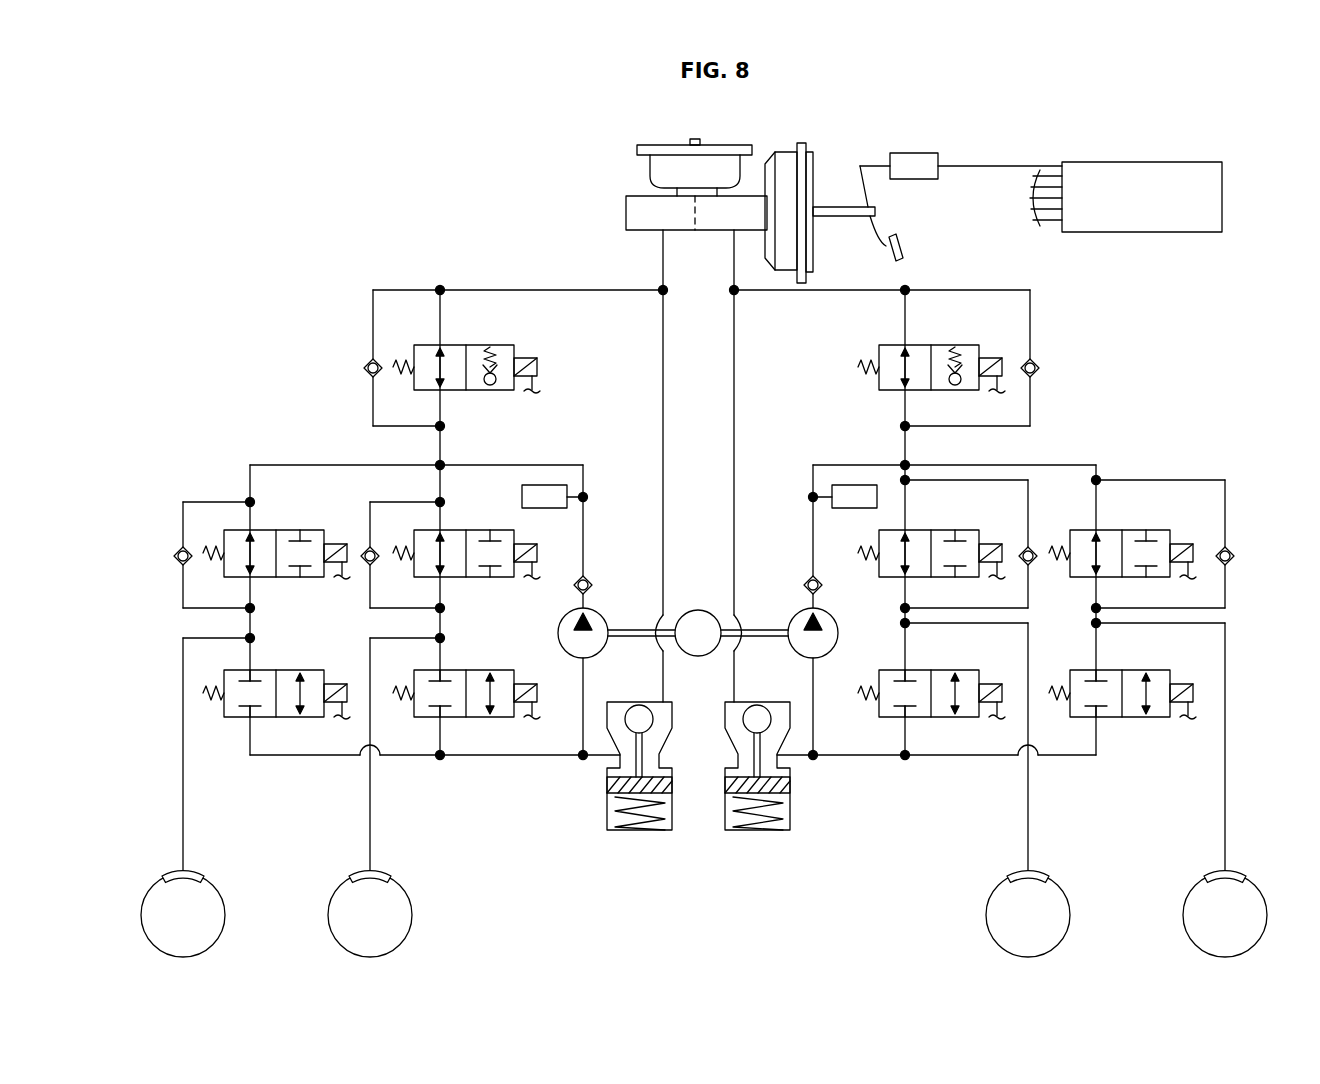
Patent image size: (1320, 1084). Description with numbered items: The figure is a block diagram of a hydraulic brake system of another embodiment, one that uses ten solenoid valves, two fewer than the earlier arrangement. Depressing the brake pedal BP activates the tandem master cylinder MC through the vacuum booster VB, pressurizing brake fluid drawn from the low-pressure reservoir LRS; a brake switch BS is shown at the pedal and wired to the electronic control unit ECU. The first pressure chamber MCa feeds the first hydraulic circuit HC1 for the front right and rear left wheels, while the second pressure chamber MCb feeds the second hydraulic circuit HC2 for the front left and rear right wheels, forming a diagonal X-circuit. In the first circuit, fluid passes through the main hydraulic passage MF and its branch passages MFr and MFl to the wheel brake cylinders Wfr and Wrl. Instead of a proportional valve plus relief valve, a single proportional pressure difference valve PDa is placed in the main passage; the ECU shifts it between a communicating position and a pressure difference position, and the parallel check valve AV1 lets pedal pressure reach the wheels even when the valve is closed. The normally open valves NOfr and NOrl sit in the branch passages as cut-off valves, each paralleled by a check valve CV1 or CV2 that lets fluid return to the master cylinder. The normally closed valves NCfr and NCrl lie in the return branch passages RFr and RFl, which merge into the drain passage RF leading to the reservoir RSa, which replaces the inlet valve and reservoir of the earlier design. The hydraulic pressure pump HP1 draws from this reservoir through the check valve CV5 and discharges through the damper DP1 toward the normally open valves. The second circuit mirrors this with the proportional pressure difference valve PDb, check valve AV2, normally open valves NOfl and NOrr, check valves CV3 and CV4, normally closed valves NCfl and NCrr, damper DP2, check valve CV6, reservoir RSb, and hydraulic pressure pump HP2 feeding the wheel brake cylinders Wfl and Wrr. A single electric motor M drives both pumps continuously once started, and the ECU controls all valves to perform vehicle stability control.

The low-pressure reservoir LRS is at (652, 171).
The master cylinder MC is at (626, 205).
The first pressure chamber MCa is at (640, 233).
The second pressure chamber MCb is at (716, 233).
The vacuum booster VB is at (813, 256).
The brake pedal BP is at (878, 225).
The brake switch BS is at (961, 166).
The electronic control unit ECU is at (1126, 197).
The first hydraulic circuit HC1 is at (494, 280).
The second hydraulic circuit HC2 is at (938, 280).
The check valve AV1 is at (364, 372).
The check valve AV2 is at (1058, 363).
The proportional pressure difference valve PDa is at (470, 350).
The proportional pressure difference valve PDb is at (932, 350).
The main hydraulic passage MF is at (440, 453).
The branch hydraulic passage MFr is at (252, 492).
The branch hydraulic passage MFl is at (442, 490).
The damper DP1 is at (544, 508).
The damper DP2 is at (845, 508).
The check valve CV1 is at (190, 548).
The check valve CV2 is at (378, 548).
The check valve CV3 is at (1020, 549).
The check valve CV4 is at (1217, 549).
The check valve CV5 is at (592, 578).
The check valve CV6 is at (805, 578).
The normally open valve NOfr is at (280, 530).
The normally open valve NOrl is at (455, 530).
The normally open valve NOfl is at (930, 530).
The normally open valve NOrr is at (1120, 530).
The normally closed valve NCfr is at (280, 670).
The normally closed valve NCrl is at (470, 670).
The normally closed valve NCfl is at (928, 670).
The normally closed valve NCrr is at (1122, 670).
The hydraulic pressure pump HP1 is at (598, 616).
The hydraulic pressure pump HP2 is at (804, 616).
The electric motor M is at (698, 633).
The branch passage RFr is at (288, 757).
The branch passage RFl is at (444, 752).
The drain passage RF is at (466, 757).
The reservoir RSa is at (606, 785).
The reservoir RSb is at (790, 785).
The wheel brake cylinder Wfr is at (165, 874).
The wheel brake cylinder Wrl is at (353, 874).
The wheel brake cylinder Wfl is at (1044, 874).
The wheel brake cylinder Wrr is at (1241, 874).